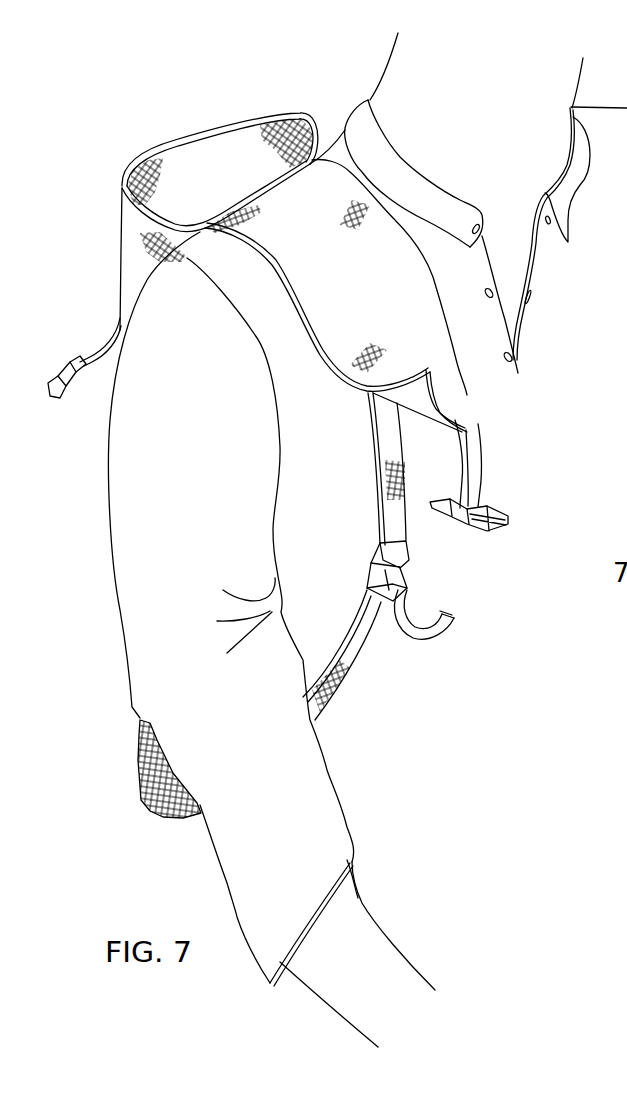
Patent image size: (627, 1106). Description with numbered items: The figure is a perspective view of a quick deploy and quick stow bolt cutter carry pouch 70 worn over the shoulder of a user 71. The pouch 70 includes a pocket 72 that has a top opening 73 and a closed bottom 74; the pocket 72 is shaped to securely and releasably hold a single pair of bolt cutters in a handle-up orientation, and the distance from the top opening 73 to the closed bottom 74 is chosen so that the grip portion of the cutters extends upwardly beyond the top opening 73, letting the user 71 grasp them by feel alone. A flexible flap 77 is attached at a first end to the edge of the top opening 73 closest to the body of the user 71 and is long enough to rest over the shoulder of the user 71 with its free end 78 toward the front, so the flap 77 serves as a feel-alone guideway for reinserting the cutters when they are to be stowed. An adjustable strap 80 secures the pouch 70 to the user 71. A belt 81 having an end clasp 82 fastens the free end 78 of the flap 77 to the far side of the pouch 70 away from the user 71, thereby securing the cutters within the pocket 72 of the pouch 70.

The bolt cutter carry pouch 70 is at (125, 218).
The user 71 is at (178, 499).
The pocket 72 is at (218, 162).
The top opening 73 is at (267, 114).
The closed bottom 74 is at (150, 811).
The flexible flap 77 is at (305, 287).
The free end 78 is at (440, 397).
The adjustable strap 80 is at (367, 650).
The belt 81 is at (480, 458).
The end clasp 82 is at (62, 400).